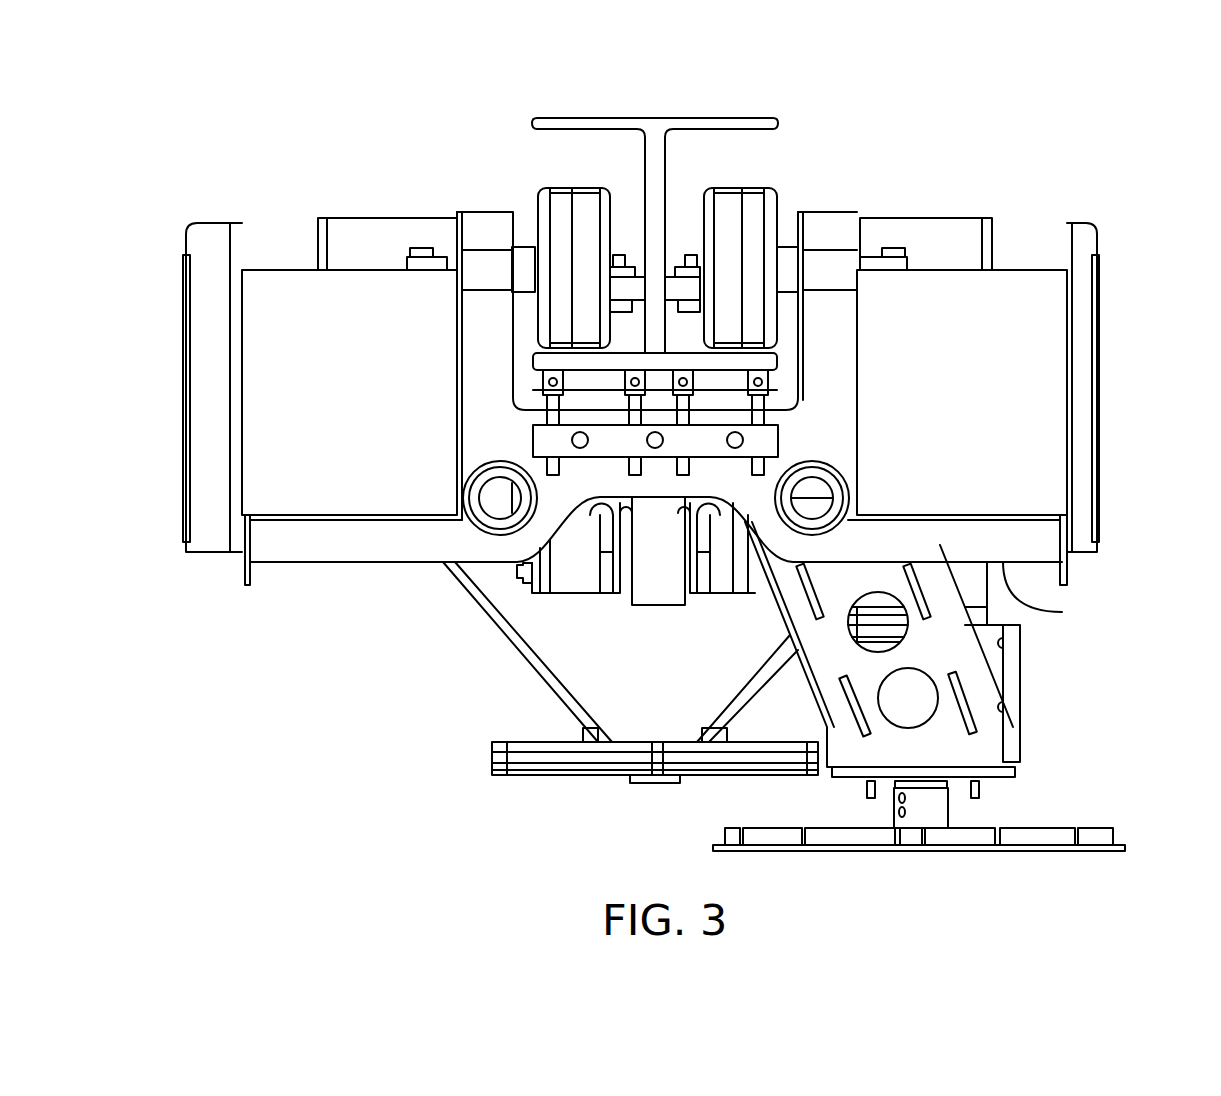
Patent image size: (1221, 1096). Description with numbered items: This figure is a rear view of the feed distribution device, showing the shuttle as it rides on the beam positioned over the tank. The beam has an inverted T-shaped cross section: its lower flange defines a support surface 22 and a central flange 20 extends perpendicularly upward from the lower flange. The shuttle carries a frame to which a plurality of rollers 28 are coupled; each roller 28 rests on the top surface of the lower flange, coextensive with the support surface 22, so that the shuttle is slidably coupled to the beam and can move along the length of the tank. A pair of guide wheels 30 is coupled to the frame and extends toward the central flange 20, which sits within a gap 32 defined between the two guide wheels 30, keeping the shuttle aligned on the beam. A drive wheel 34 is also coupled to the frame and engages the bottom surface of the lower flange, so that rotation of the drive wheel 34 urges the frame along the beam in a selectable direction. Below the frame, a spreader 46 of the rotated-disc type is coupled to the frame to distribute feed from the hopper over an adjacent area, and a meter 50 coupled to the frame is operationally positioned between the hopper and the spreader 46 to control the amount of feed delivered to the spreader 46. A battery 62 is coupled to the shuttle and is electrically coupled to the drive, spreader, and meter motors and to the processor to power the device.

The central flange 20 is at (643, 160).
The support surface 22 is at (692, 98).
The rollers 28 is at (547, 196).
The guide wheels 30 is at (640, 292).
The gap 32 is at (637, 245).
The drive wheel 34 is at (655, 585).
The spreader 46 is at (1108, 837).
The meter 50 is at (527, 776).
The battery 62 is at (316, 485).